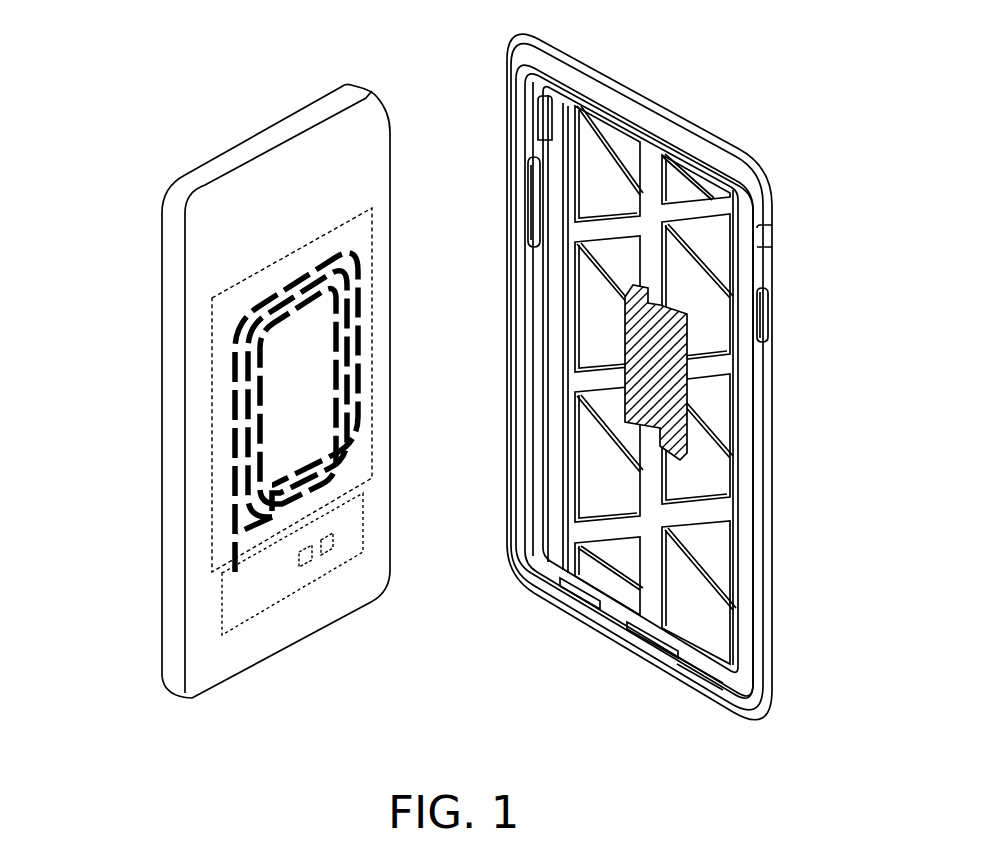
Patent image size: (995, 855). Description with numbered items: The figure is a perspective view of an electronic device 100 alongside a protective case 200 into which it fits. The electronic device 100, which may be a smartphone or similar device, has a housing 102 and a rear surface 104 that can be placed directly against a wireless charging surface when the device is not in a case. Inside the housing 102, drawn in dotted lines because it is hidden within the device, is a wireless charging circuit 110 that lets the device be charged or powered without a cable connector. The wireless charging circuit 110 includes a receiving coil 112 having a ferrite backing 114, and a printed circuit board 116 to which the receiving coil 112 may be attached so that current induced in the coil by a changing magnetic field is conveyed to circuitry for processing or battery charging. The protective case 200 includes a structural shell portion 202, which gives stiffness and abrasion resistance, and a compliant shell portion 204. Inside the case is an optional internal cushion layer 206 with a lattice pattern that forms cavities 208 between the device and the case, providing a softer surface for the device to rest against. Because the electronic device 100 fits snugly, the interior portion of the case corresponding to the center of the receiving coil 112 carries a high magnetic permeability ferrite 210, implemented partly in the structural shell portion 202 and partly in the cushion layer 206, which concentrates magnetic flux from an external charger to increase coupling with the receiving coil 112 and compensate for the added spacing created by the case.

The electronic device 100 is at (196, 70).
The housing 102 is at (163, 173).
The rear surface 104 is at (350, 133).
The wireless charging circuit 110 is at (95, 315).
The receiving coil 112 is at (237, 321).
The ferrite backing 114 is at (212, 398).
The printed circuit board 116 is at (236, 606).
The protective case 200 is at (696, 46).
The structural shell portion 202 is at (730, 152).
The compliant shell portion 204 is at (744, 263).
The internal cushion layer 206 is at (657, 518).
The cavities 208 is at (685, 600).
The ferrite 210 is at (677, 332).